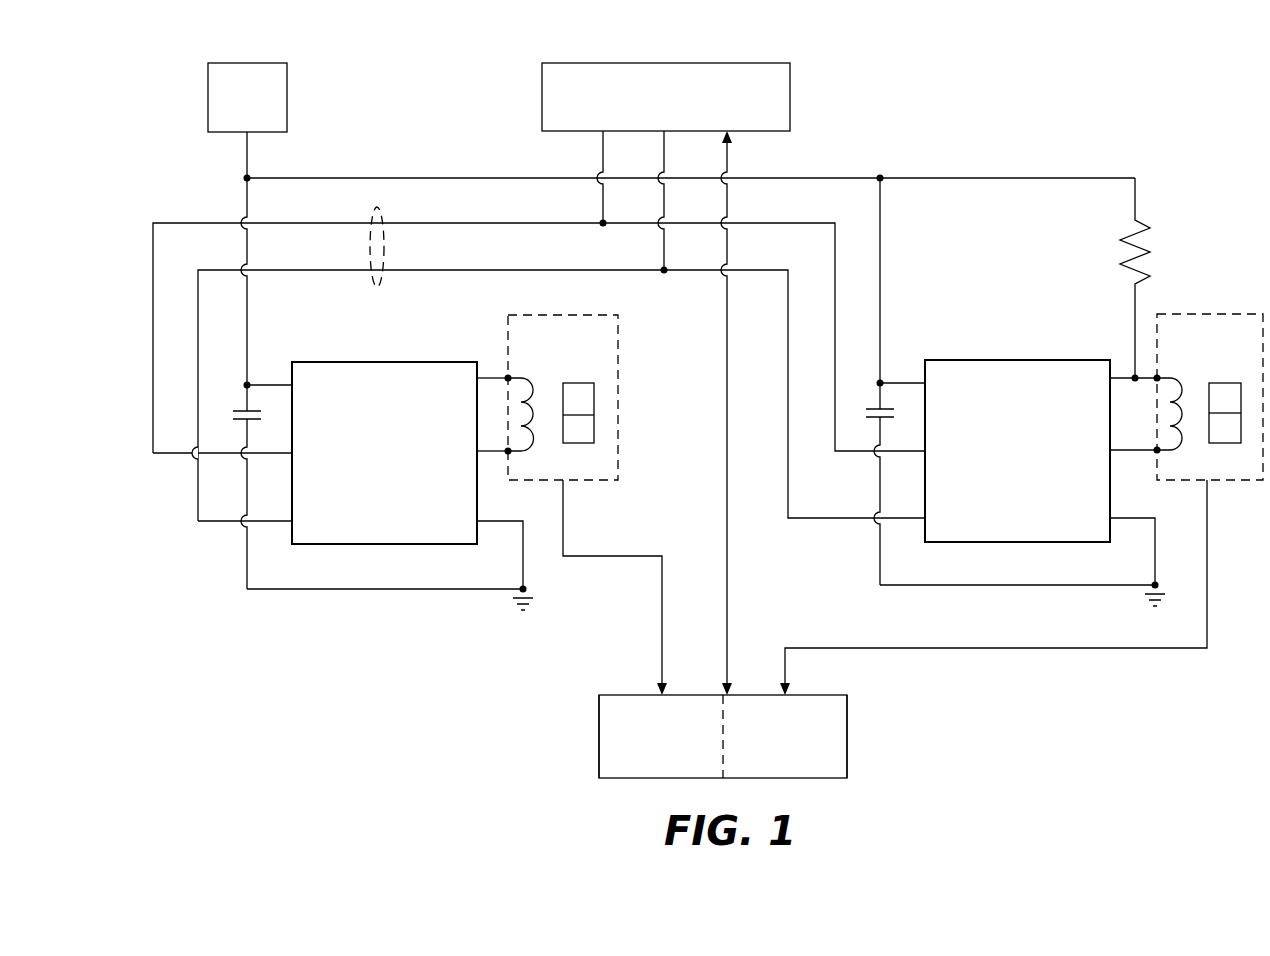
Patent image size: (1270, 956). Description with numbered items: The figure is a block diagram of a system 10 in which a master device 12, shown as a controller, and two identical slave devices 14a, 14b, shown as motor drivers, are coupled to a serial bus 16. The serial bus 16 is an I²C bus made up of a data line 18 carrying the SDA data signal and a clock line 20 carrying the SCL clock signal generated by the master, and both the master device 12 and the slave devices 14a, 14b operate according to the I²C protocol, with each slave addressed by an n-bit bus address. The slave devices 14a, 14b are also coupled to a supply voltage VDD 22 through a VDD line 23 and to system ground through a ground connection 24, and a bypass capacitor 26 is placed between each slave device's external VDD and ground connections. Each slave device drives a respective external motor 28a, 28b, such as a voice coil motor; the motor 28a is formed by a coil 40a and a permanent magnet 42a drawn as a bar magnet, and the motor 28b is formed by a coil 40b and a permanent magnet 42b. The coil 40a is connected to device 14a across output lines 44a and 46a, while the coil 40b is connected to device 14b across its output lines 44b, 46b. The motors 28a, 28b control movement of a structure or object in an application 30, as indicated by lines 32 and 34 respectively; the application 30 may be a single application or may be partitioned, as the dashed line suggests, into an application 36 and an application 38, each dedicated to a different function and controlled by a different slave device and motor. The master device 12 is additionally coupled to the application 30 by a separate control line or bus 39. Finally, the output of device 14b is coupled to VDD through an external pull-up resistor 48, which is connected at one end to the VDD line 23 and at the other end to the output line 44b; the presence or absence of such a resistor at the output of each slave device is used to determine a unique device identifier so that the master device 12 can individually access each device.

The system 10 is at (1164, 143).
The master device 12 is at (657, 119).
The slave device 14a is at (375, 505).
The slave device 14b is at (1007, 503).
The serial bus 16 is at (539, 392).
The data line 18 is at (176, 456).
The clock line 20 is at (221, 523).
The supply voltage VDD 22 is at (238, 119).
The VDD line 23 is at (390, 178).
The ground connection 24 is at (275, 592).
The bypass capacitor 26 is at (237, 410).
The motor 28a is at (566, 367).
The motor 28b is at (1211, 367).
The application 30 is at (714, 761).
The line 32 is at (662, 633).
The line 34 is at (955, 650).
The application 36 is at (599, 734).
The application 38 is at (847, 742).
The control line or bus 39 is at (727, 600).
The coil 40a is at (535, 376).
The coil 40b is at (1183, 452).
The permanent magnet 42a is at (568, 445).
The permanent magnet 42b is at (1215, 445).
The output line 44a is at (493, 376).
The output line 44b is at (1131, 376).
The output line 46a is at (492, 455).
The output line 46b is at (1118, 452).
The pull-up resistor Rext 48 is at (1125, 248).